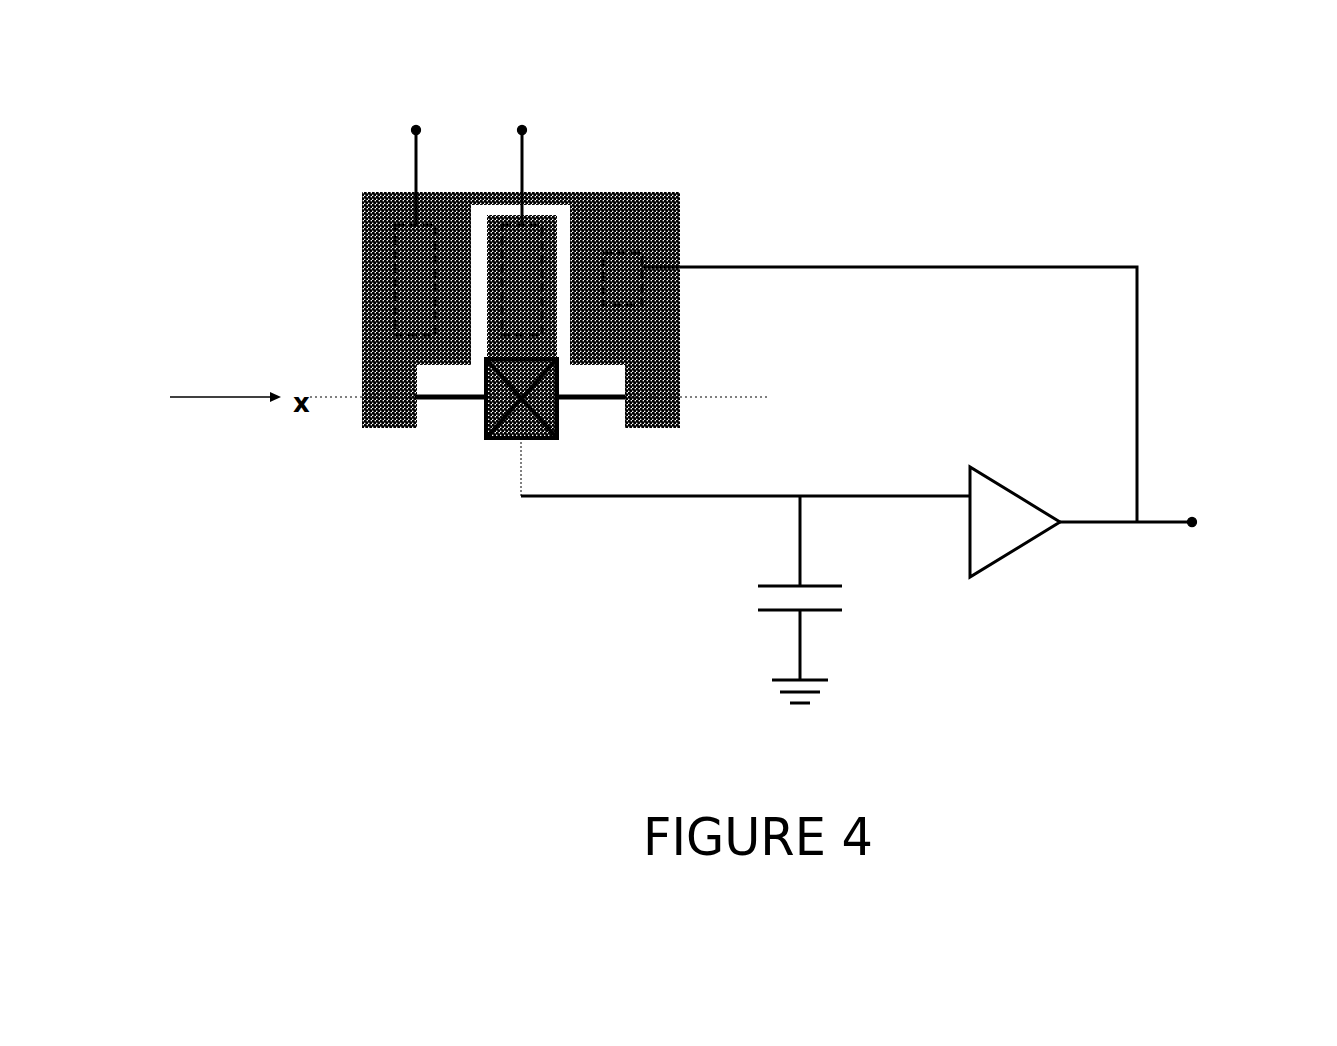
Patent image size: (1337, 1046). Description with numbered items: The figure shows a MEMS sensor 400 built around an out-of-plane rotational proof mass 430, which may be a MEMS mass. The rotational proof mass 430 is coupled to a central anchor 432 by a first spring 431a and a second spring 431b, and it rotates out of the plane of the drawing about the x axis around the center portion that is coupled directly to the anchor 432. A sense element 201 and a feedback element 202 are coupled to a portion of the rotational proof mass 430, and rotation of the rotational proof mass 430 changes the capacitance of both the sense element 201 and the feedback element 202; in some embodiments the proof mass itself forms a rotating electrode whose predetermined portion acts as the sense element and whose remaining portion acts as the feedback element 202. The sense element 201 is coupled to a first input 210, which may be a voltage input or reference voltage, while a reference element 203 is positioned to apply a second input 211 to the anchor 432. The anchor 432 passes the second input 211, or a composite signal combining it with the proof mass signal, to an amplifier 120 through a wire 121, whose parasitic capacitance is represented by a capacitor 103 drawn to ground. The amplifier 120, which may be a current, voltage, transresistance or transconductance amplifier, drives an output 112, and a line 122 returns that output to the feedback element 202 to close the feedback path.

The MEMS sensor 400 is at (242, 150).
The rotational proof mass 430 is at (362, 338).
The sense element 201 is at (392, 198).
The reference element 203 is at (542, 223).
The feedback element 202 is at (638, 253).
The first input 210 is at (418, 126).
The second input 211 is at (524, 126).
The first spring 431a is at (595, 432).
The second spring 431b is at (437, 405).
The anchor 432 is at (495, 440).
The wire 121 is at (608, 497).
The capacitor 103 is at (845, 610).
The amplifier 120 is at (1040, 541).
The feedback line 122 is at (1140, 317).
The output 112 is at (1200, 522).